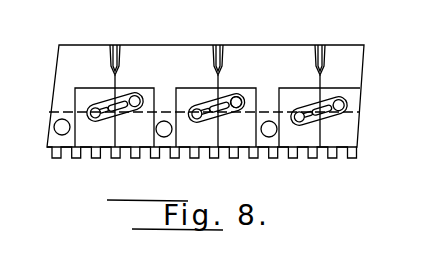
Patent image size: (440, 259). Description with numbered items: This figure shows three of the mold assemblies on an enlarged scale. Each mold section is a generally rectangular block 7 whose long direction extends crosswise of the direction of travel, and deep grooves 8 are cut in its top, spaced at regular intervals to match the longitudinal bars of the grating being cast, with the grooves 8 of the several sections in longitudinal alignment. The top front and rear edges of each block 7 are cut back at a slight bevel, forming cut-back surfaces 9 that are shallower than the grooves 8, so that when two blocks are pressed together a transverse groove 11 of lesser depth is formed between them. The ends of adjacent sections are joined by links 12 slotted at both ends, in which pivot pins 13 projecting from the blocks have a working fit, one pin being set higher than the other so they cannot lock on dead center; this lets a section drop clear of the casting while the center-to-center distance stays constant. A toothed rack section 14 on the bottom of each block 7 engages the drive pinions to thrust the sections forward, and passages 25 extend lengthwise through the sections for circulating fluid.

The rectangular block 7 is at (173, 58).
The deep grooves 8 is at (137, 58).
The cut-back surfaces 9 is at (223, 52).
The transverse groove 11 is at (113, 48).
The links 12 is at (353, 113).
The pivot pins 13 is at (235, 100).
The toothed rack section 14 is at (340, 159).
The passages 25 is at (160, 137).